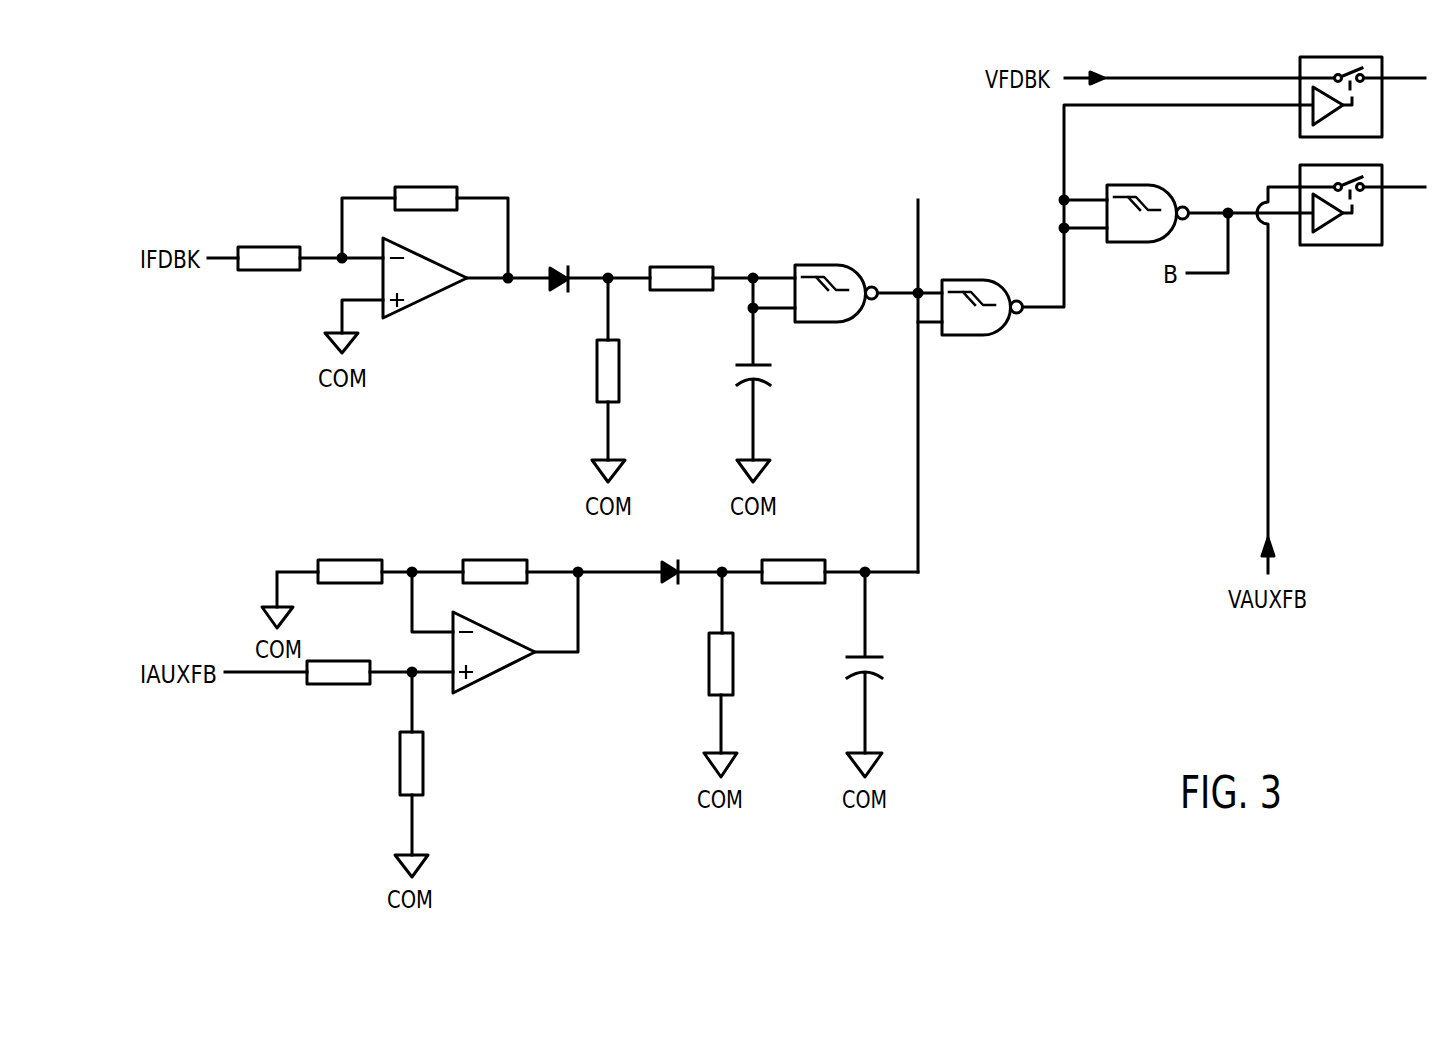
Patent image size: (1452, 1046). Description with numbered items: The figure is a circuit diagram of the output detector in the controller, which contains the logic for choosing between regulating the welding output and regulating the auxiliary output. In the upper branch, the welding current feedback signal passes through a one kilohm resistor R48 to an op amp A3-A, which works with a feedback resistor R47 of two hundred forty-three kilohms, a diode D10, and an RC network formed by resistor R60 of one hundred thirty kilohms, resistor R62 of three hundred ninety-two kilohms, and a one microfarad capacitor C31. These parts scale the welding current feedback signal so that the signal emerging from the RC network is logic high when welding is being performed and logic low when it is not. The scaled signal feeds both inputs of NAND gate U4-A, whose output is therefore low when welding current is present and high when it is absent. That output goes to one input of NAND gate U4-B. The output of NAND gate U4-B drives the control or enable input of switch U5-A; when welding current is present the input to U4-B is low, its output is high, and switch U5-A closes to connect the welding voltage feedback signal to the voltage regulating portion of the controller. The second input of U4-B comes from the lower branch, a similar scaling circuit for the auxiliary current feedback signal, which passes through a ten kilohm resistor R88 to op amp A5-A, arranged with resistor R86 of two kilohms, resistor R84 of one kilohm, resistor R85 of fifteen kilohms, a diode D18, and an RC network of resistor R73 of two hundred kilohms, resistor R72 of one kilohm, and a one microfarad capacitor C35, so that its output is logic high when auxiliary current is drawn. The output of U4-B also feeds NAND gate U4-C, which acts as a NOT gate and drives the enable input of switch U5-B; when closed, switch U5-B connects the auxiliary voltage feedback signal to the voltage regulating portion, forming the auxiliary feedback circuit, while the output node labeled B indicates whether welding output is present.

The resistor R47 is at (425, 216).
The resistor R48 is at (310, 261).
The op amp A3-A is at (425, 288).
The diode D10 is at (595, 263).
The resistor R60 is at (722, 281).
The resistor R62 is at (616, 380).
The capacitor C31 is at (757, 380).
The NAND gate U4-A is at (847, 279).
The NAND gate U4-B is at (1115, 220).
The NAND gate U4-C is at (1188, 199).
The switch U5-A is at (1362, 98).
The switch U5-B is at (1361, 206).
The resistor R84 is at (390, 574).
The resistor R85 is at (562, 574).
The resistor R88 is at (380, 675).
The resistor R86 is at (404, 774).
The op amp A5-A is at (495, 662).
The diode D18 is at (707, 556).
The resistor R72 is at (840, 574).
The resistor R73 is at (727, 674).
The capacitor C35 is at (868, 674).